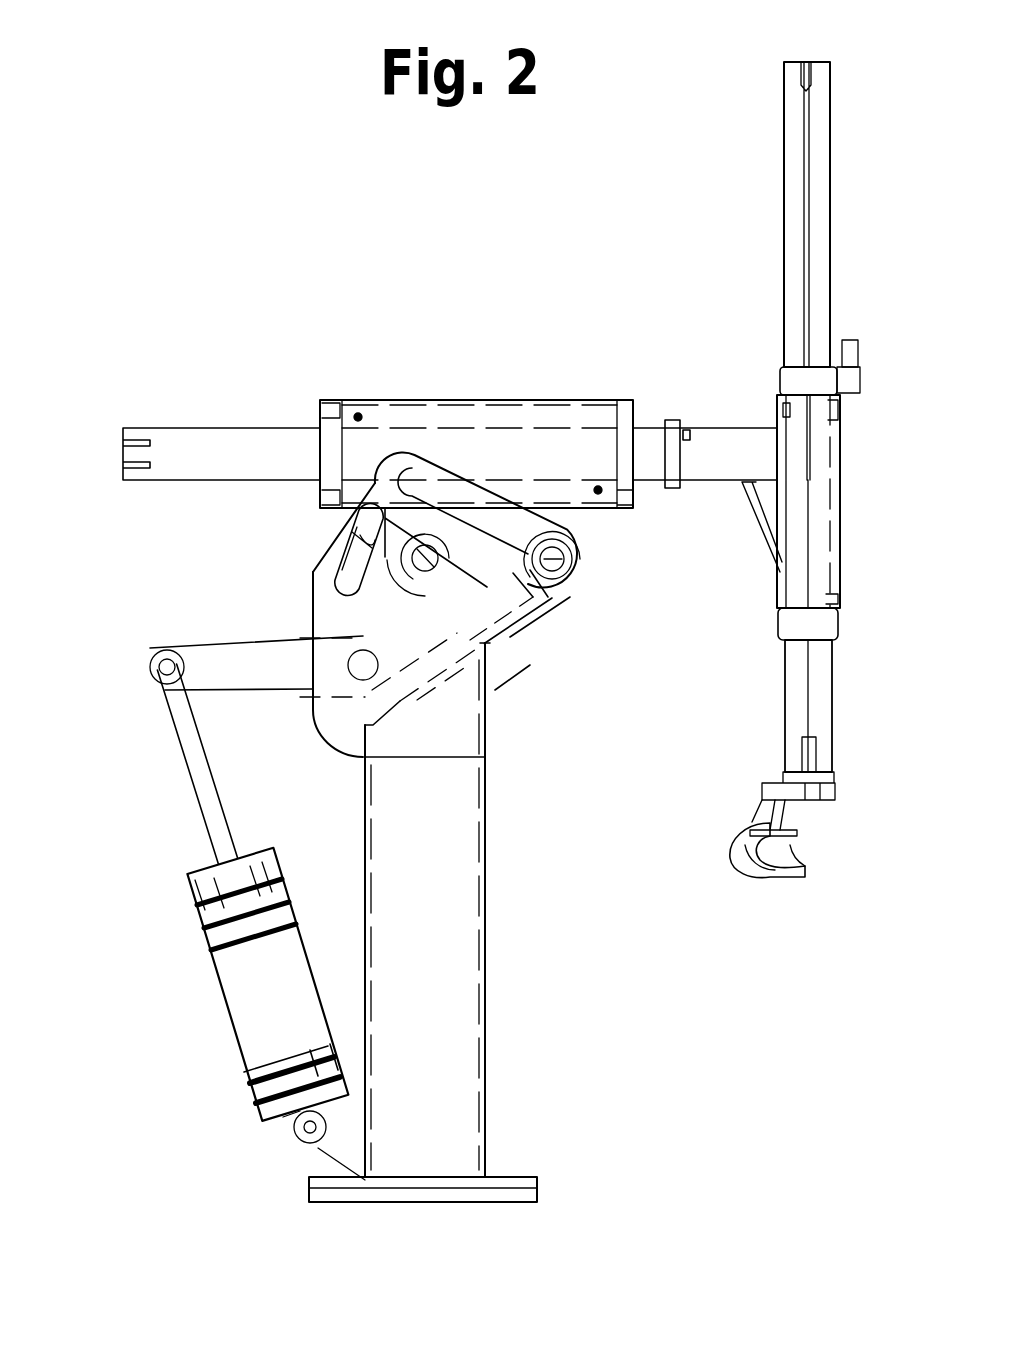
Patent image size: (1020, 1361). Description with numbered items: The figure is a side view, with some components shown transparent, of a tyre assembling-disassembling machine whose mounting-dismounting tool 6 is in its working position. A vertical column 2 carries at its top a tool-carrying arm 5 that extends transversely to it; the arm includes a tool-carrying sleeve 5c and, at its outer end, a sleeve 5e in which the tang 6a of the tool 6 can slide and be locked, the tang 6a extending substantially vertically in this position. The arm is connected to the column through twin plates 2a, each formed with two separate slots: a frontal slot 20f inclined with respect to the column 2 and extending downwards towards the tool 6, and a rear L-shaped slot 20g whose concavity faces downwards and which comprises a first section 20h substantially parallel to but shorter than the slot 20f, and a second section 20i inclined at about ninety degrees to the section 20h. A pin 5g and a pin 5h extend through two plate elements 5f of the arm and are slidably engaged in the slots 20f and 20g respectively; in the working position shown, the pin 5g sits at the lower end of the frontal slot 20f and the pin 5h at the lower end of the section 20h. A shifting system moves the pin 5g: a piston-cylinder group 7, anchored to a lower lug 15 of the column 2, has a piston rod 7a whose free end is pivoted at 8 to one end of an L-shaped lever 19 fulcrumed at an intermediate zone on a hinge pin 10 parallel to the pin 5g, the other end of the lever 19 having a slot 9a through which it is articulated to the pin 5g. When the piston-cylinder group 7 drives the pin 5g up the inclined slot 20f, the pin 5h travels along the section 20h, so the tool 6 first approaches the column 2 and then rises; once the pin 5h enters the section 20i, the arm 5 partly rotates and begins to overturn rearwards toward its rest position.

The column 2 is at (487, 868).
The twin plate 2a is at (457, 764).
The tool-carrying arm 5 is at (566, 402).
The tool-carrying sleeve 5c is at (392, 420).
The sleeve 5e is at (797, 432).
The plate element 5f is at (578, 522).
The pin 5g is at (560, 565).
The pin 5h is at (447, 572).
The mounting-dismounting tool 6 is at (727, 856).
The tang 6a is at (793, 667).
The piston-cylinder group 7 is at (190, 905).
The piston rod 7a is at (200, 785).
The pivot 8 is at (152, 658).
The slot 9a is at (535, 584).
The hinge pin 10 is at (363, 667).
The lower lug 15 is at (352, 1147).
The L-shaped lever 19 is at (290, 665).
The frontal slot 20f is at (500, 505).
The rear L-shaped slot 20g is at (362, 538).
The first section 20h is at (397, 540).
The second section 20i is at (356, 559).